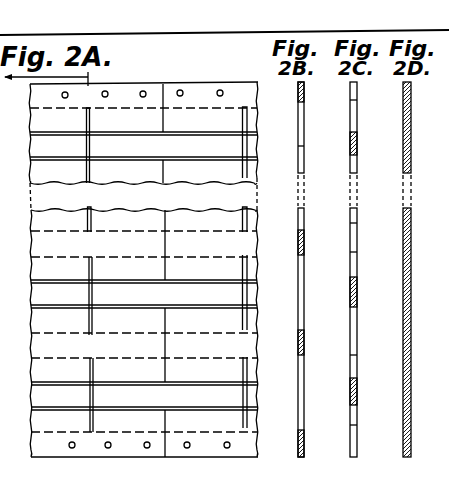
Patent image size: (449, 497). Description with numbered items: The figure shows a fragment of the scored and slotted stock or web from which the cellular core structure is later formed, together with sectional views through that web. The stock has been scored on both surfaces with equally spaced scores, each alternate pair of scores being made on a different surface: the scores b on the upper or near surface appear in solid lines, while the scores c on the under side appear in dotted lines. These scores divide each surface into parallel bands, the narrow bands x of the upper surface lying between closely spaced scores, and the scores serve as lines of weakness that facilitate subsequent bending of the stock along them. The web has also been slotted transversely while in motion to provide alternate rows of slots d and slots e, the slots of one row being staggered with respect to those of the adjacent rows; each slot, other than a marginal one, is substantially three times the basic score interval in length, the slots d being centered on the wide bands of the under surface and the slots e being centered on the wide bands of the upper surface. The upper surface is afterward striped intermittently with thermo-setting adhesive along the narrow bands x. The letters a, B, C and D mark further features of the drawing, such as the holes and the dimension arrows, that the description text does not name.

In FIG. 2A, the apertures in end boards a is at (62, 96).
In FIG. 2A, the scores on the upper surface b is at (236, 132).
In FIG. 2B, the scores on the upper surface b is at (298, 131).
In FIG. 2C, the scores on the upper surface b is at (350, 155).
In FIG. 2D, the scores on the upper surface b is at (403, 152).
In FIG. 2A, the scores on the under surface c is at (30, 108).
In FIG. 2B, the scores on the under surface c is at (304, 103).
In FIG. 2C, the scores on the under surface c is at (357, 100).
In FIG. 2D, the scores on the under surface c is at (411, 100).
In FIG. 2A, the slots d is at (82, 146).
In FIG. 2B, the slots d is at (304, 146).
In FIG. 2C, the slots d is at (353, 268).
In FIG. 2A, the slots e is at (163, 113).
In FIG. 2C, the slots e is at (350, 102).
In FIG. 2D, the narrow bands x is at (448, 150).
In FIG. 2A, the dimension B is at (92, 443).
In FIG. 2A, the dimension C is at (163, 58).
In FIG. 2A, the dimension D is at (200, 95).